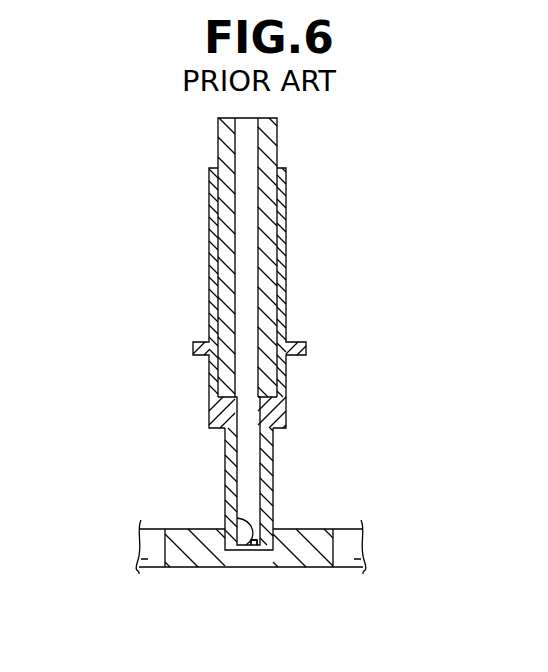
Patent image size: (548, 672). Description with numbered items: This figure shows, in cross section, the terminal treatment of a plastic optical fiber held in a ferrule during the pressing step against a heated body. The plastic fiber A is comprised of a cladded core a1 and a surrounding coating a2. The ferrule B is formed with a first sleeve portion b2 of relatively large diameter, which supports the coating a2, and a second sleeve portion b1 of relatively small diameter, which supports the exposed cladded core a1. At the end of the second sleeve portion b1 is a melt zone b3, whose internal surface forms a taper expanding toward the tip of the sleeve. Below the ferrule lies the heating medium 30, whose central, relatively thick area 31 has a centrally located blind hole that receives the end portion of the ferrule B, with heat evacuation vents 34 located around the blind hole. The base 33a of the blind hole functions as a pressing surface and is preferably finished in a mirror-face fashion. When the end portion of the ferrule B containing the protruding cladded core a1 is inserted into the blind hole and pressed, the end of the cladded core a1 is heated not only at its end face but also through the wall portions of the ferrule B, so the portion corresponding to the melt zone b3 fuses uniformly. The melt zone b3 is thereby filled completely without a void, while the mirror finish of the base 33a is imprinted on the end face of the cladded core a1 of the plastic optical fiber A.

The plastic fiber A is at (230, 257).
The cladded core a1 is at (250, 141).
The coating a2 is at (277, 159).
The ferrule B is at (234, 359).
The second sleeve portion b1 is at (273, 477).
The first sleeve portion b2 is at (287, 258).
The melt zone b3 is at (239, 524).
The heating medium 30 is at (249, 548).
The central area 31 is at (197, 560).
The base of the blind hole 33a is at (255, 550).
The heat evacuation vents 34 is at (150, 553).